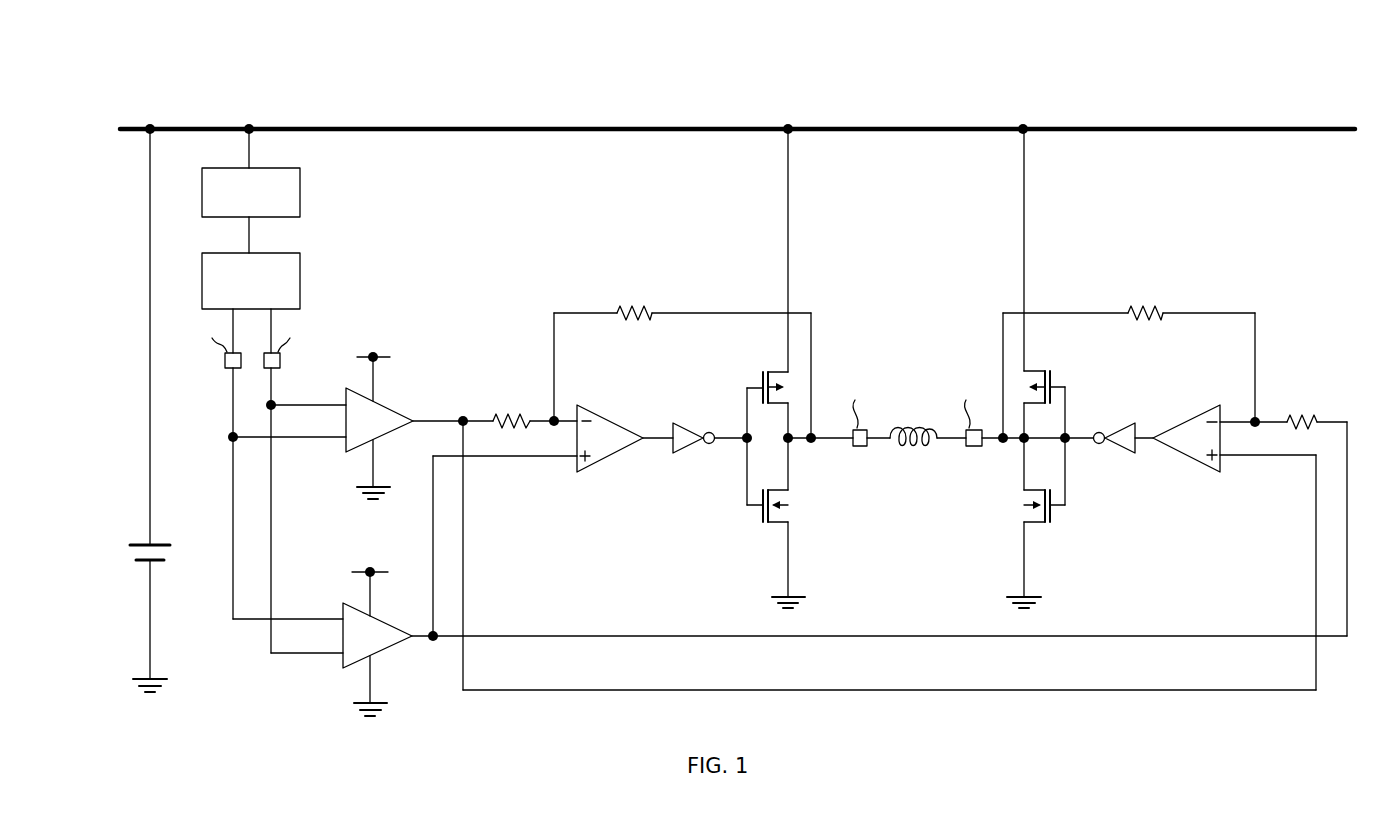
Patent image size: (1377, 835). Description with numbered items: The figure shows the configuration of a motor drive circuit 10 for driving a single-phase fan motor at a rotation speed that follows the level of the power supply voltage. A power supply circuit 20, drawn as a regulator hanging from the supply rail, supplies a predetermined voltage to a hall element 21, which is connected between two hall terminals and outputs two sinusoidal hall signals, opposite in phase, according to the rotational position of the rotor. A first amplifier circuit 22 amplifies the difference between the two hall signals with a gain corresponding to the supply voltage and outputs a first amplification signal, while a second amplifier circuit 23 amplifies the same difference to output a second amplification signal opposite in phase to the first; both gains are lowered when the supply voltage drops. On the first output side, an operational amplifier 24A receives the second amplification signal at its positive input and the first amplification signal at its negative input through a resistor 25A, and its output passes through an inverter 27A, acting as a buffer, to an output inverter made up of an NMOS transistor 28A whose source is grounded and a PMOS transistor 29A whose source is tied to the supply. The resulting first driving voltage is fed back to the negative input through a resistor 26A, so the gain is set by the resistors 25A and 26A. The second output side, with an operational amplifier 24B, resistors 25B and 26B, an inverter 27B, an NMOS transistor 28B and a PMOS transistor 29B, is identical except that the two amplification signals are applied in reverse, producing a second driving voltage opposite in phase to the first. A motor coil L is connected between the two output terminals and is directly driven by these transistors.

The motor drive circuit 10 is at (851, 95).
The power supply circuit 20 is at (300, 168).
The hall element 21 is at (300, 253).
The first amplifier circuit 22 is at (345, 454).
The second amplifier circuit 23 is at (343, 670).
The operational amplifier 24A is at (575, 474).
The operational amplifier 24B is at (1221, 474).
The resistor 25A is at (513, 410).
The resistor 25B is at (1304, 410).
The resistor 26A is at (622, 310).
The resistor 26B is at (1140, 310).
The inverter 27A is at (686, 422).
The inverter 27B is at (1140, 422).
The NMOS transistor 28A is at (761, 524).
The NMOS transistor 28B is at (1052, 524).
The PMOS transistor 29A is at (761, 374).
The PMOS transistor 29B is at (1051, 373).
The motor coil L is at (912, 452).